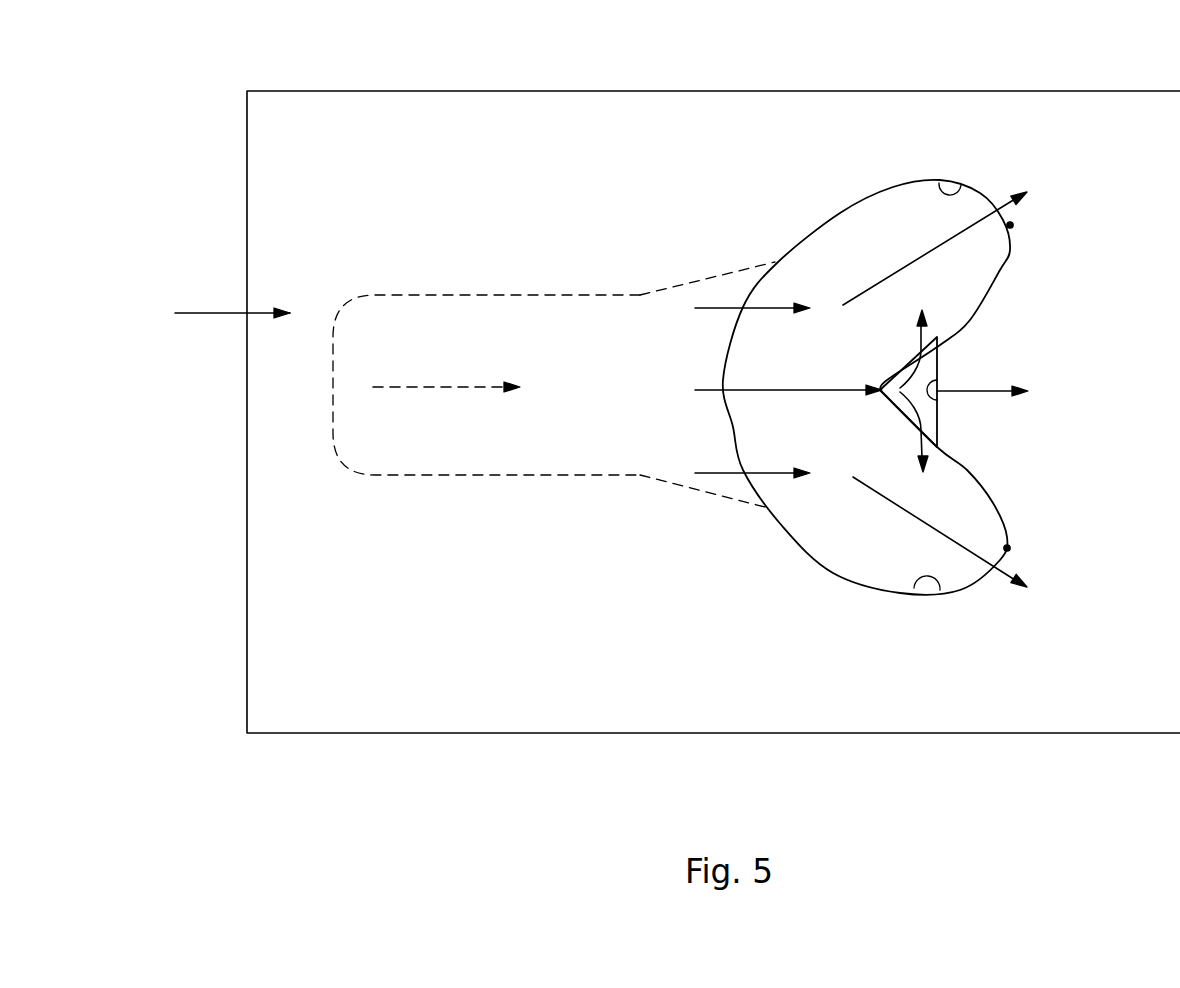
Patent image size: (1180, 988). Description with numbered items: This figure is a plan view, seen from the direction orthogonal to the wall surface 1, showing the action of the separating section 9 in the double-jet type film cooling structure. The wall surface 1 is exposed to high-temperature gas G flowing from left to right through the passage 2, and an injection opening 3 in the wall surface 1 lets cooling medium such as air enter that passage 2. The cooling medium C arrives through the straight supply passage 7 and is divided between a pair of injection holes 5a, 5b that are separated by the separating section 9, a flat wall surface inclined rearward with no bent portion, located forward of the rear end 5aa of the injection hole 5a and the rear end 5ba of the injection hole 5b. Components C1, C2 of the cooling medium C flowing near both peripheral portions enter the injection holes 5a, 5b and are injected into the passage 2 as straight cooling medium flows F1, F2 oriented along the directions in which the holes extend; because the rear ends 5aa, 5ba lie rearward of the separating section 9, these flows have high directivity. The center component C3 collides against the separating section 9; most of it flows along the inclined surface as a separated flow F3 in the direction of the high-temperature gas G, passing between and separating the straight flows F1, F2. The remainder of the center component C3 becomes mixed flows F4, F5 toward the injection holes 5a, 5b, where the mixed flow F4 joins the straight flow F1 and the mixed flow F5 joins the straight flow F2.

The wall surface 1 is at (383, 125).
The passage 2 is at (1145, 172).
The injection opening 3 is at (829, 522).
The injection hole 5a is at (960, 185).
The injection hole 5b is at (932, 592).
The rear end of injection hole 5aa is at (1012, 225).
The rear end of injection hole 5ba is at (1010, 548).
The supply passage 7 is at (395, 450).
The separating section 9 is at (937, 400).
The high-temperature gas G is at (213, 311).
The cooling medium C is at (430, 388).
The component of cooling medium C1 is at (715, 306).
The component of cooling medium C2 is at (715, 475).
The center component of cooling medium C3 is at (835, 392).
The straight cooling medium flow F1 is at (972, 227).
The straight cooling medium flow F2 is at (975, 553).
The separated flow F3 is at (998, 392).
The mixed flow F4 is at (940, 362).
The mixed flow F5 is at (940, 446).